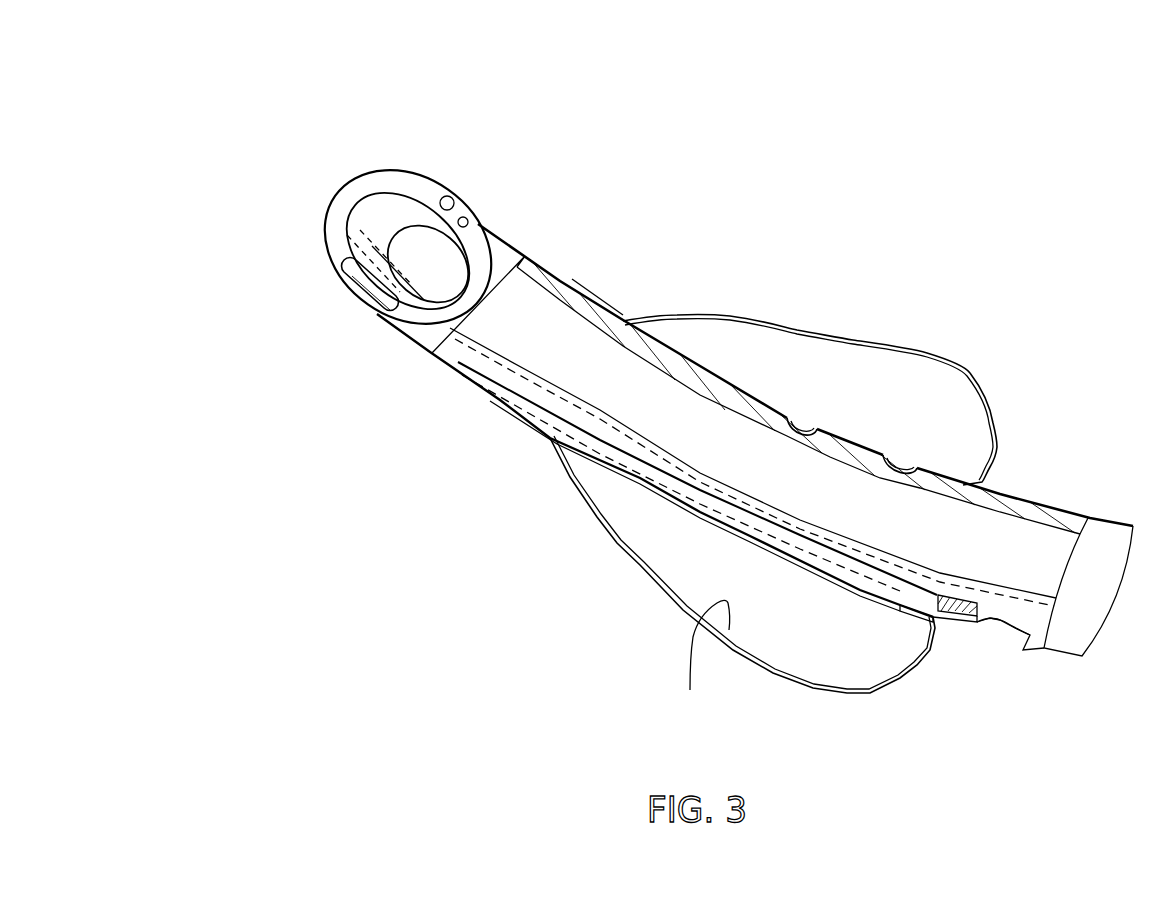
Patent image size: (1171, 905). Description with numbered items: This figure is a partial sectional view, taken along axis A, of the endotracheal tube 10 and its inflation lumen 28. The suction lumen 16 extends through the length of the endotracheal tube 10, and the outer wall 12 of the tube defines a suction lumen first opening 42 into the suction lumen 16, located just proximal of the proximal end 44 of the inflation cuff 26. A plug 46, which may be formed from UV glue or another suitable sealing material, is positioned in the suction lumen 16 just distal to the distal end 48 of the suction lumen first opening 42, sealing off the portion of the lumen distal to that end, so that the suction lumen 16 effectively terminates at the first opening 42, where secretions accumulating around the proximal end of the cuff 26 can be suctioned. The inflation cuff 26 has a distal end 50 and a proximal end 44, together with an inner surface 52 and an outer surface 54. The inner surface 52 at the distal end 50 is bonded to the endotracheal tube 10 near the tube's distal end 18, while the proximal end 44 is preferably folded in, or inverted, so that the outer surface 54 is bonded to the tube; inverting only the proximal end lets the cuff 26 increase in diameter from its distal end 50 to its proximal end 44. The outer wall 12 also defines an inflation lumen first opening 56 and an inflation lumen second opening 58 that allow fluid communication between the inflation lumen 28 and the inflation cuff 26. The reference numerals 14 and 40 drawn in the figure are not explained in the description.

The endotracheal tube 10 is at (893, 213).
The outer wall 12 is at (410, 312).
The tube body 14 is at (377, 203).
The suction lumen 16 is at (372, 280).
The distal end 18 is at (327, 203).
The inflation cuff 26 is at (637, 560).
The inflation lumen 28 is at (452, 201).
The secondary lumen opening 40 is at (470, 216).
The suction lumen first opening 42 is at (1005, 628).
The proximal end 44 is at (912, 613).
The plug 46 is at (958, 612).
The distal end 48 is at (970, 620).
The distal end 50 is at (538, 437).
The inner surface 52 is at (705, 666).
The outer surface 54 is at (842, 700).
The inflation lumen first opening 56 is at (803, 430).
The inflation lumen second opening 58 is at (900, 462).